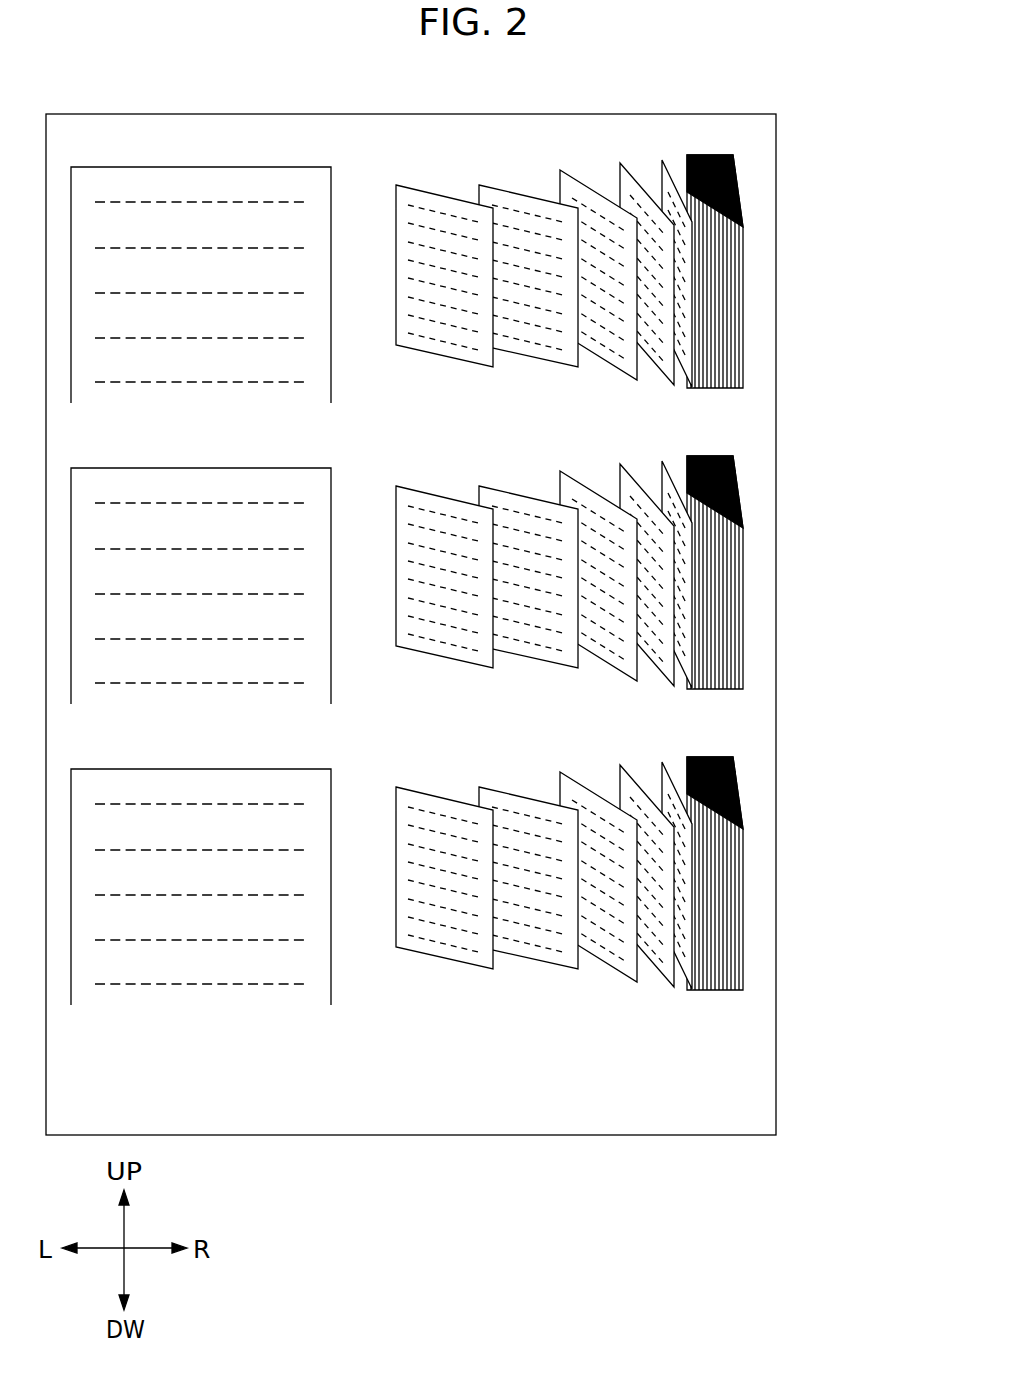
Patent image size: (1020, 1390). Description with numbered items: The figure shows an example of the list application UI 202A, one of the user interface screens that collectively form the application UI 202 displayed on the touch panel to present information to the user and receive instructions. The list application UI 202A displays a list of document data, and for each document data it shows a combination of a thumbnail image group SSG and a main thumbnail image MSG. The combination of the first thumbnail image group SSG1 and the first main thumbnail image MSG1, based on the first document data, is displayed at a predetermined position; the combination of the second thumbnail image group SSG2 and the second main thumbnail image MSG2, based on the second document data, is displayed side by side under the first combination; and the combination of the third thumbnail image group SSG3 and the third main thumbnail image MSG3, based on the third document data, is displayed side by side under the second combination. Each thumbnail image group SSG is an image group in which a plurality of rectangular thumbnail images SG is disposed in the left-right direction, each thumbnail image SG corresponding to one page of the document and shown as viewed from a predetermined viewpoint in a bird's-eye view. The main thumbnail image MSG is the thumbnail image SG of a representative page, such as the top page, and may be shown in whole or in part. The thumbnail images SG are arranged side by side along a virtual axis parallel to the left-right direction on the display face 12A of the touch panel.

The display face 12A is at (758, 132).
The list application UI 202A is at (411, 605).
The application UI 202 is at (469, 115).
The main thumbnail image MSG is at (204, 569).
The first main thumbnail image MSG1 is at (167, 167).
The second main thumbnail image MSG2 is at (204, 569).
The third main thumbnail image MSG3 is at (204, 870).
The thumbnail image group SSG is at (652, 590).
The first thumbnail image group SSG1 is at (752, 260).
The second thumbnail image group SSG2 is at (652, 590).
The third thumbnail image group SSG3 is at (652, 891).
The thumbnail image SG is at (652, 590).